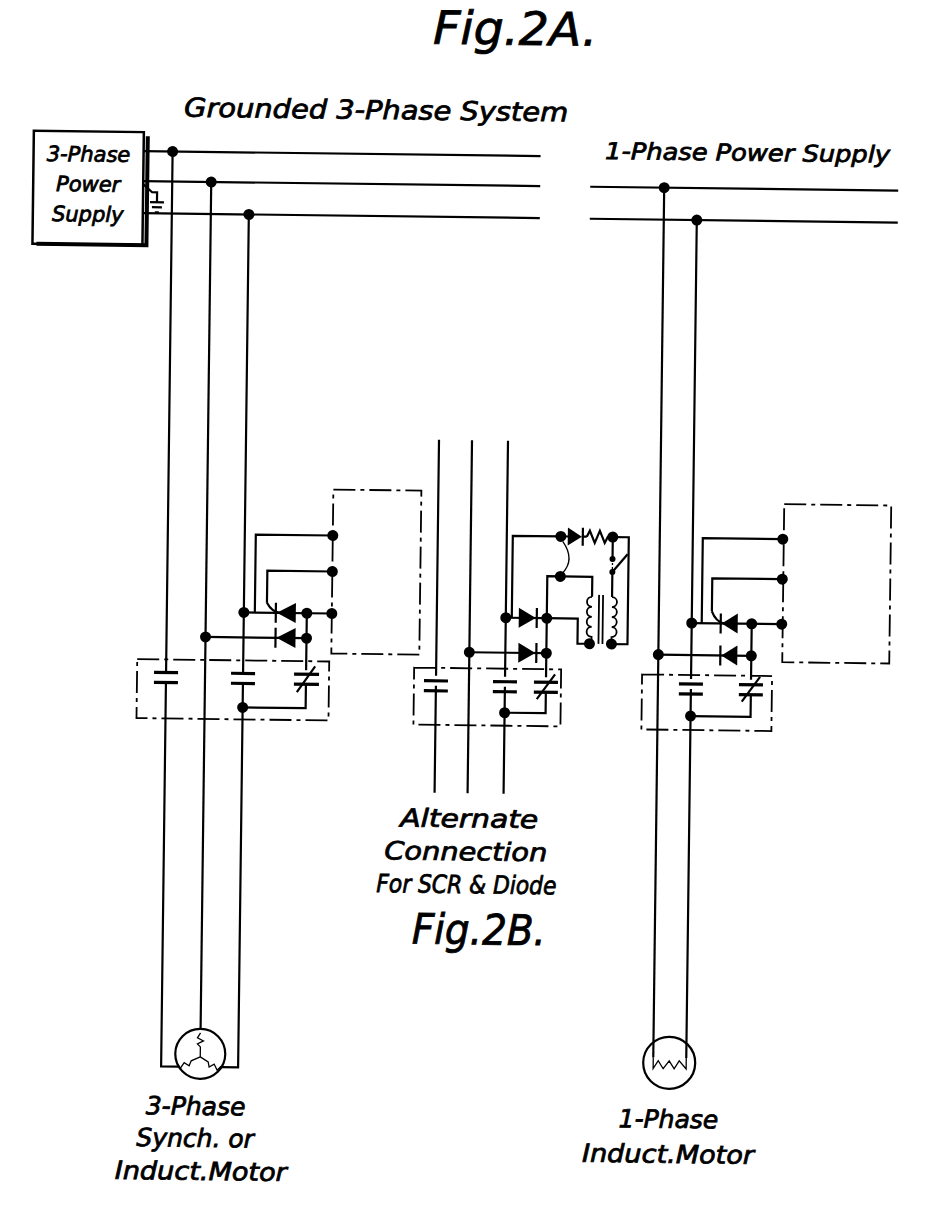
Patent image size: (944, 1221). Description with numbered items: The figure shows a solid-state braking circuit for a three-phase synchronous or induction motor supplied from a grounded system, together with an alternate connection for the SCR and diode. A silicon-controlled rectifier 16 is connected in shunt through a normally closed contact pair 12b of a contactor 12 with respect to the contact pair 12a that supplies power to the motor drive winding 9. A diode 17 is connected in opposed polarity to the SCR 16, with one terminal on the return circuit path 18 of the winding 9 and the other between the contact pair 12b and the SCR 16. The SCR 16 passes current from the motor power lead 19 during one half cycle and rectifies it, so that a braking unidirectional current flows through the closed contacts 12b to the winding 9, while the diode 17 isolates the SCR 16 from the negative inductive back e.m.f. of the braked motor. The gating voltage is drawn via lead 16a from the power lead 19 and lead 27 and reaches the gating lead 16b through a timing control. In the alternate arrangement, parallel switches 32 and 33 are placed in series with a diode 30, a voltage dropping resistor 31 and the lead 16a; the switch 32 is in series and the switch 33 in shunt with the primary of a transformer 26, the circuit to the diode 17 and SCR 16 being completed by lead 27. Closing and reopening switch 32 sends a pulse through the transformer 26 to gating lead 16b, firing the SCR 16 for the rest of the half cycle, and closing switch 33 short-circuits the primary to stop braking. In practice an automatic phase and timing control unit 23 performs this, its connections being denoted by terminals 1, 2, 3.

In FIG. 2A, the motor drive winding 9 is at (212, 1060).
In FIG. 2A, the contactor 12 is at (316, 726).
In FIG. 2B, the contactor 12 is at (548, 728).
In FIG. 2A, the contact pair 12a is at (255, 682).
In FIG. 2B, the contact pair 12a is at (516, 684).
In FIG. 2A, the normally closed contact pair 12b is at (318, 682).
In FIG. 2B, the normally closed contact pair 12b is at (560, 684).
In FIG. 2A, the silicon-controlled rectifier 16 is at (300, 600).
In FIG. 2B, the silicon-controlled rectifier 16 is at (535, 612).
In FIG. 2A, the lead 16a is at (270, 537).
In FIG. 2B, the lead 16a is at (530, 535).
In FIG. 2A, the gating lead 16b is at (305, 608).
In FIG. 2B, the gating lead 16b is at (555, 535).
In FIG. 2A, the diode 17 is at (322, 618).
In FIG. 2B, the diode 17 is at (512, 656).
In FIG. 2A, the return circuit path 18 is at (206, 343).
In FIG. 2B, the return circuit path 18 is at (471, 446).
In FIG. 2A, the motor power lead 19 is at (245, 426).
In FIG. 2B, the motor power lead 19 is at (507, 450).
In FIG. 2A, the automatic phase and timing control unit 23 is at (389, 504).
In FIG. 2B, the transformer 26 is at (628, 655).
In FIG. 2A, the lead 27 is at (290, 647).
In FIG. 2B, the lead 27 is at (570, 625).
In FIG. 2B, the diode 30 is at (575, 530).
In FIG. 2B, the voltage dropping resistor 31 is at (604, 534).
In FIG. 2B, the switch 32 is at (629, 545).
In FIG. 2B, the switch 33 is at (608, 612).
In FIG. 2A, the connection 1 is at (324, 525).
In FIG. 2A, the connection 2 is at (323, 561).
In FIG. 2A, the connection 3 is at (321, 603).